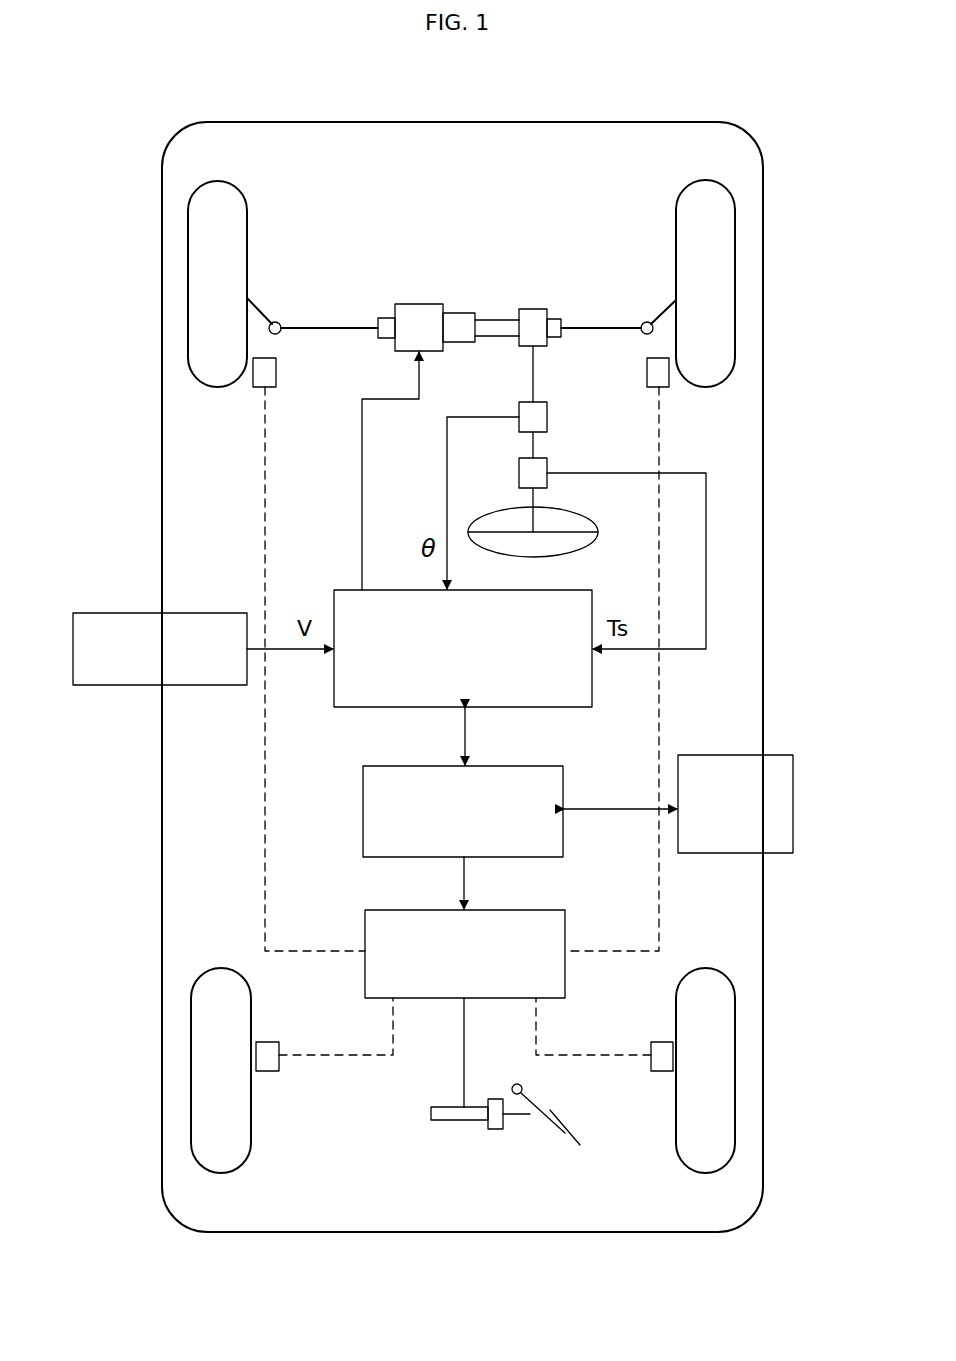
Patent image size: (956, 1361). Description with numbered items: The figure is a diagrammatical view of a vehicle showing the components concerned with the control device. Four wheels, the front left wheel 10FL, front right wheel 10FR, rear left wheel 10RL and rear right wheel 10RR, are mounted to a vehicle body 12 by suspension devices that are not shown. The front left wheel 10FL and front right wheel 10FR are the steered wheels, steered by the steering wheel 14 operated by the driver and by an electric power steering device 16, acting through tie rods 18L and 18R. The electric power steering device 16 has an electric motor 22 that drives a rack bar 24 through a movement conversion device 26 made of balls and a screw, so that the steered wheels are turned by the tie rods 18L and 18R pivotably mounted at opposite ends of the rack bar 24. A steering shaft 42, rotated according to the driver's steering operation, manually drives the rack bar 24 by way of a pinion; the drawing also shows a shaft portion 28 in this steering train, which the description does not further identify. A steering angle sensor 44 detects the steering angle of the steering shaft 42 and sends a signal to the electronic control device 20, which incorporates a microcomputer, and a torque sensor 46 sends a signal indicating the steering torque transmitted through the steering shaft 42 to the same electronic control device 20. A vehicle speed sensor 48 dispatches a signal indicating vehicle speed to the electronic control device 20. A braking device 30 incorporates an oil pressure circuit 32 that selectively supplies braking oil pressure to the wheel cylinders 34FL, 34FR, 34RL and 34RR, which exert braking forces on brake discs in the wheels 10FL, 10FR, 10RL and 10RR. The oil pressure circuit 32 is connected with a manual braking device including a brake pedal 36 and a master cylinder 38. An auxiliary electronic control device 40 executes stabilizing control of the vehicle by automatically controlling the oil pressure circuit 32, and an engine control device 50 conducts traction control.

The front left wheel 10FL is at (188, 298).
The front right wheel 10FR is at (735, 297).
The rear left wheel 10RL is at (191, 1077).
The rear right wheel 10RR is at (735, 1077).
The vehicle body 12 is at (763, 563).
The steering wheel 14 is at (577, 514).
The electric power steering device 16 is at (461, 313).
The tie rod 18L is at (262, 312).
The tie rod 18R is at (660, 312).
The electronic control device 20 is at (463, 648).
The electric motor 22 is at (416, 304).
The rack bar 24 is at (310, 330).
The movement conversion device 26 is at (461, 342).
The pinion shaft 28 is at (493, 310).
The braking device 30 is at (486, 1122).
The oil pressure circuit 32 is at (465, 954).
The wheel cylinder 34FL is at (276, 374).
The wheel cylinder 34FR is at (647, 372).
The wheel cylinder 34RL is at (265, 1042).
The wheel cylinder 34RR is at (662, 1042).
The brake pedal 36 is at (575, 1135).
The master cylinder 38 is at (448, 1122).
The auxiliary electronic control device 40 is at (463, 811).
The steering shaft 42 is at (536, 366).
The steering angle sensor 44 is at (547, 418).
The torque sensor 46 is at (519, 476).
The vehicle speed sensor 48 is at (197, 613).
The engine control device 50 is at (708, 855).